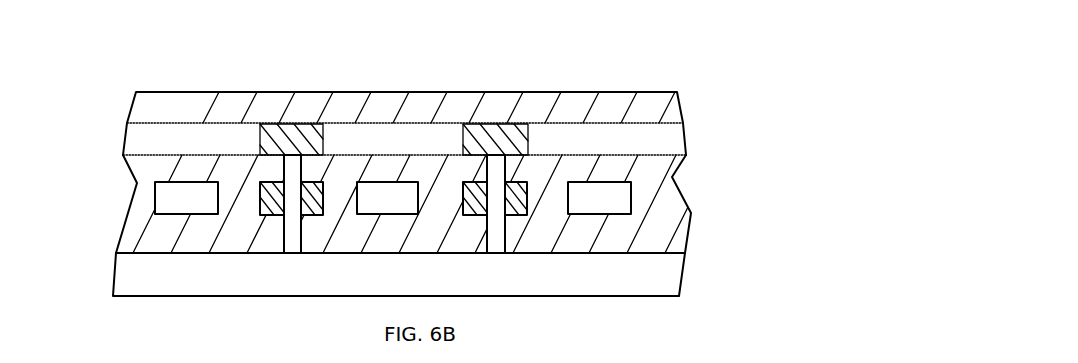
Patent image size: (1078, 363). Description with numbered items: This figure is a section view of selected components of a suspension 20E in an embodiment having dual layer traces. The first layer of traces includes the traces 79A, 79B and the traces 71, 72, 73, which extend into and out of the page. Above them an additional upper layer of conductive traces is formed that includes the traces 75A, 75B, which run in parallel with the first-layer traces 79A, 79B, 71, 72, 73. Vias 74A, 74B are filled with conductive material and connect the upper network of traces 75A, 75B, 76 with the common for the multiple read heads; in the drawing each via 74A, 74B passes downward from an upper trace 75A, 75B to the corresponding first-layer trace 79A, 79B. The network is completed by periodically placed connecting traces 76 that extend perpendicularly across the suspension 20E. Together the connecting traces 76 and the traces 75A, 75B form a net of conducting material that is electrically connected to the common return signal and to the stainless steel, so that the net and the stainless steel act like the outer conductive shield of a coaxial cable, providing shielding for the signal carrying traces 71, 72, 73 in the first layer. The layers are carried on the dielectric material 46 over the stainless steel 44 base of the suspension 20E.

The suspension 20E is at (127, 98).
The connecting traces 76 is at (222, 128).
The upper layer conductive trace 75A is at (307, 130).
The upper layer conductive trace 75B is at (488, 130).
The dielectric material layer 46 is at (675, 183).
The stainless steel layer 44 is at (675, 270).
The first layer trace 71 is at (176, 231).
The first layer trace 72 is at (392, 215).
The first layer trace 73 is at (592, 215).
The via 74A is at (290, 247).
The via 74B is at (497, 247).
The first layer trace 79A is at (267, 215).
The first layer trace 79B is at (472, 215).